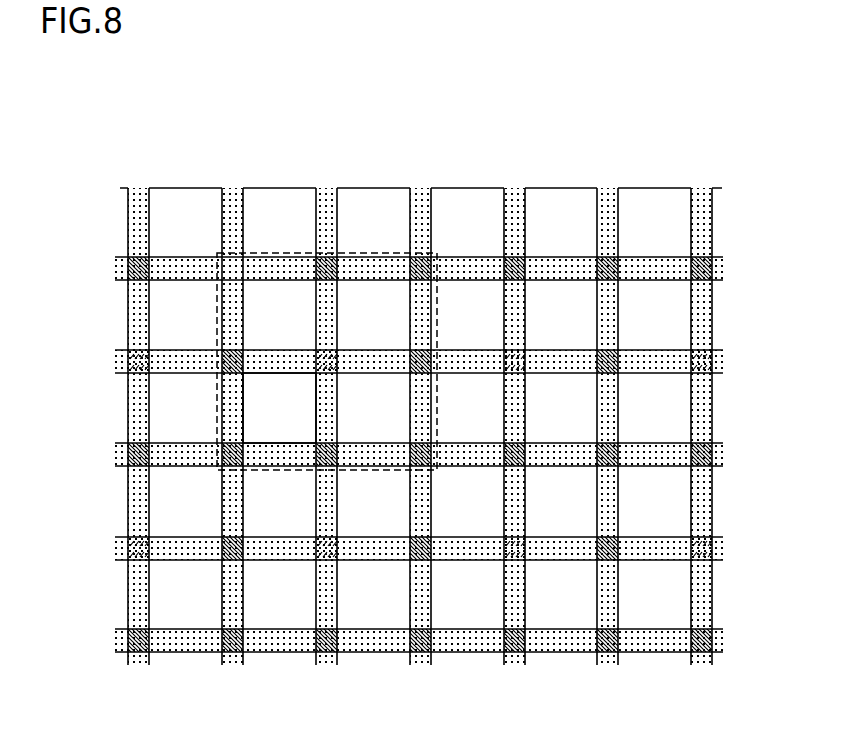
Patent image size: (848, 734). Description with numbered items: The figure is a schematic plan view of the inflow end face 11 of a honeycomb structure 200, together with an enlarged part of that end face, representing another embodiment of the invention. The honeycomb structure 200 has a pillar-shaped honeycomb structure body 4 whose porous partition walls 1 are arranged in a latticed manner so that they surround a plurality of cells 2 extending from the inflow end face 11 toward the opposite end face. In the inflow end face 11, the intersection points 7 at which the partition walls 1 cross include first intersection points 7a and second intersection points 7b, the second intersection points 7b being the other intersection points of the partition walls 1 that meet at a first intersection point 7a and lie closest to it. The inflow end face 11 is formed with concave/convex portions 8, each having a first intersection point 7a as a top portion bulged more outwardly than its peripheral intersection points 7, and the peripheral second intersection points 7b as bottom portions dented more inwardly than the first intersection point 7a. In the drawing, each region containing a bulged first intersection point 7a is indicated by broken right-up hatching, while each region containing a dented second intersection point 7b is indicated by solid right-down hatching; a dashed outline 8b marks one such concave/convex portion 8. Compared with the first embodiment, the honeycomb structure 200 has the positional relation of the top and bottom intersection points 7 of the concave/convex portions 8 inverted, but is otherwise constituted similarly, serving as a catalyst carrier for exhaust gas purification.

The honeycomb structure 200 is at (744, 113).
The inflow end face 11 is at (131, 120).
The partition walls 1 is at (468, 357).
The cells 2 is at (270, 413).
The honeycomb structure body 4 is at (625, 177).
The intersection points 7 is at (420, 386).
The first intersection point 7a is at (327, 357).
The second intersection points 7b is at (233, 355).
The concave/convex portions 8 is at (337, 296).
The disconnected region 8b is at (360, 327).